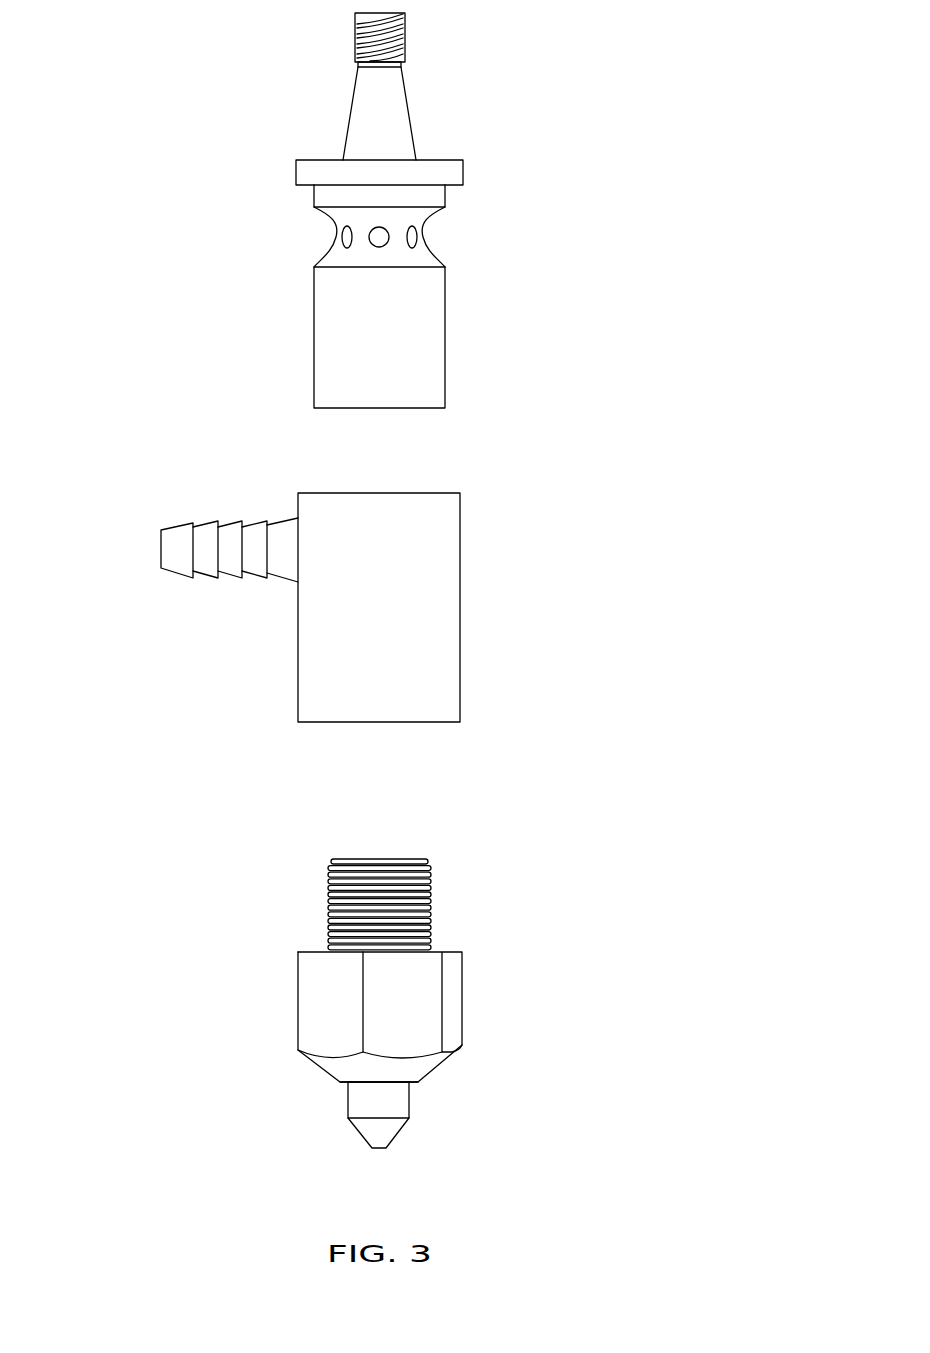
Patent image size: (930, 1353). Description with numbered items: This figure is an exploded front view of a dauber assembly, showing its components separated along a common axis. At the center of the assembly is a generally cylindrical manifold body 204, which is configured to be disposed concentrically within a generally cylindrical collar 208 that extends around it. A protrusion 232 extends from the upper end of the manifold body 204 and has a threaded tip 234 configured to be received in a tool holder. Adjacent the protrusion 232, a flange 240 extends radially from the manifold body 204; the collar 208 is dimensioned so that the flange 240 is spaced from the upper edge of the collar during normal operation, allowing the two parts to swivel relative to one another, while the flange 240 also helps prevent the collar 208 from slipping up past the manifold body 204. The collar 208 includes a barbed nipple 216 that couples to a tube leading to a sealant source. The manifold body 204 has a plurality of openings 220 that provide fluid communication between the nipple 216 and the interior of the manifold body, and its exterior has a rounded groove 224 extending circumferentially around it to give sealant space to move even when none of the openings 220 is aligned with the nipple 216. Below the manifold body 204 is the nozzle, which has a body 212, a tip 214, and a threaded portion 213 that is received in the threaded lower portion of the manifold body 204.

The threaded tip 234 is at (407, 23).
The protrusion 232 is at (403, 107).
The flange 240 is at (462, 170).
The openings 220 is at (380, 237).
The rounded groove 224 is at (430, 253).
The manifold body 204 is at (420, 368).
The barbed nipple 216 is at (212, 530).
The collar 208 is at (435, 568).
The threaded portion 213 is at (432, 910).
The body 212 is at (452, 1012).
The tip 214 is at (393, 1103).